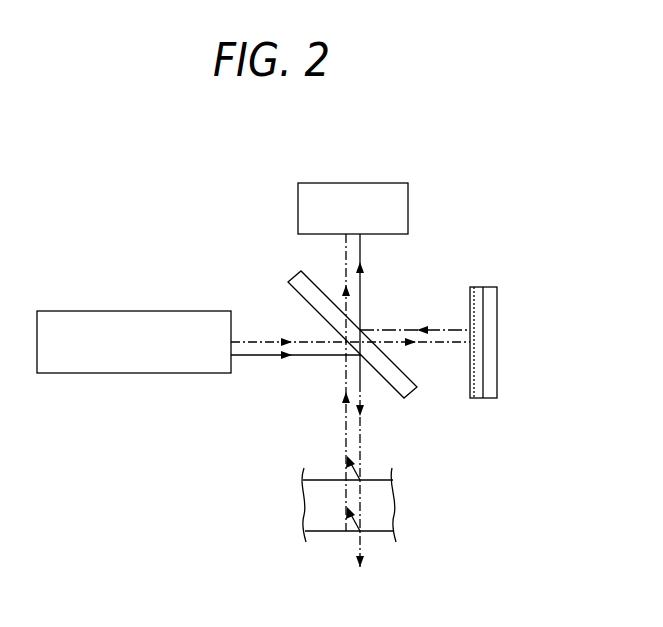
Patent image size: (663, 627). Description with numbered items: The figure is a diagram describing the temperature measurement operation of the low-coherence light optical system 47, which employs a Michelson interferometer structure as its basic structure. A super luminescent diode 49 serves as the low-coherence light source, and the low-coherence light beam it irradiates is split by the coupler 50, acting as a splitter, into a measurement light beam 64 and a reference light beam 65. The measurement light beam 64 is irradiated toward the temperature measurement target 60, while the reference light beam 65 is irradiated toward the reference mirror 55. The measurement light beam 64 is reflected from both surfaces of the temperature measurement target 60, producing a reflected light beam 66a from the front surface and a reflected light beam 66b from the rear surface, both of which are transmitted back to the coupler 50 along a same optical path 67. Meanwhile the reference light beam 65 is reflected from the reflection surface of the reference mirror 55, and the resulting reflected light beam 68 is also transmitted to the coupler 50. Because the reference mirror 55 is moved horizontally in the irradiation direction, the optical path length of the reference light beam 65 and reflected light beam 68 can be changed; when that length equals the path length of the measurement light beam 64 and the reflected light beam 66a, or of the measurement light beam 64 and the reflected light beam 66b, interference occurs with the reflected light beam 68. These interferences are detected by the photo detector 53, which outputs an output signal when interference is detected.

The low-coherence light optical system 47 is at (180, 250).
The super luminescent diode 49 is at (138, 311).
The photo detector 53 is at (352, 183).
The optical fiber coupler 50 is at (413, 398).
The reference mirror 55 is at (490, 287).
The reflected light beam 68 is at (393, 330).
The reference light beam 65 is at (443, 342).
The optical path 67 is at (345, 407).
The measurement light beam 64 is at (363, 435).
The temperature measurement target 60 is at (382, 531).
The reflected light beam 66a is at (348, 474).
The reflected light beam 66b is at (350, 527).